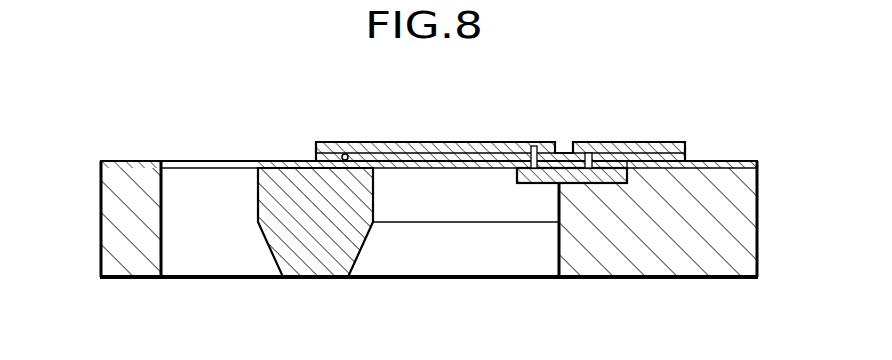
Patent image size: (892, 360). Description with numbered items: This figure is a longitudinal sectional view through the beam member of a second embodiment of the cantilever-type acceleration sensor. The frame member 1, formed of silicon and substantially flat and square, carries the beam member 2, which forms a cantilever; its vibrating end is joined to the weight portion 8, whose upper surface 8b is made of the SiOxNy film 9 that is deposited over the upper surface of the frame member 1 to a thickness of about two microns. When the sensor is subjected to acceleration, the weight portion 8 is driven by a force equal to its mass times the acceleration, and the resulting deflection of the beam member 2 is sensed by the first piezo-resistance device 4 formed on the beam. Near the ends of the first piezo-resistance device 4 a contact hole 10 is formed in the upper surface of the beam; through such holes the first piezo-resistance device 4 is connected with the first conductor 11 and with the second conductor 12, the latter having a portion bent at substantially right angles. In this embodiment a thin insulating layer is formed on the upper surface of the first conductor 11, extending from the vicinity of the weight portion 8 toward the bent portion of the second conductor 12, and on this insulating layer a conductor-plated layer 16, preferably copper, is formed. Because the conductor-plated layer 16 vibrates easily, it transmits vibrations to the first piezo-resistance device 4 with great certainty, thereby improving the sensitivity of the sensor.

The frame member 1 is at (108, 220).
The beam member 2 is at (455, 208).
The first piezo-resistance device 4 is at (538, 183).
The weight portion 8 is at (317, 258).
The upper surface 8b is at (280, 161).
The SiOxNy film 9 is at (137, 161).
The contact hole 10 is at (533, 142).
The first conductor 11 is at (347, 153).
The second conductor 12 is at (655, 142).
The conductor-plated layer 16 is at (420, 142).